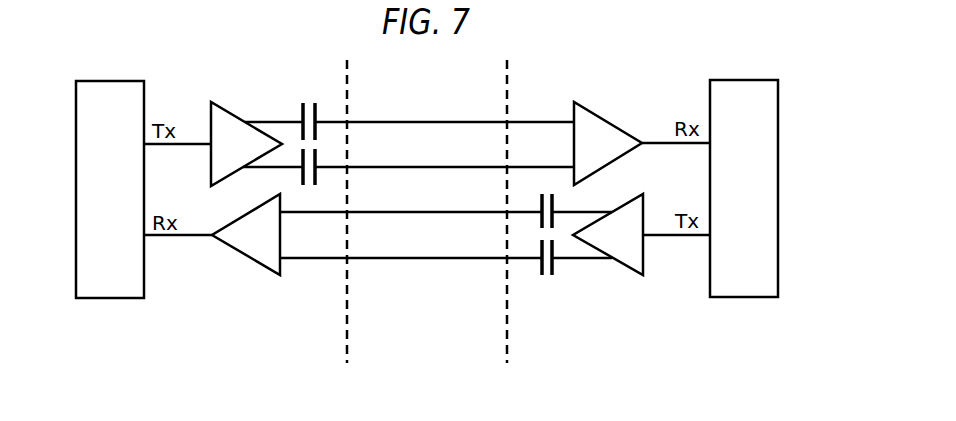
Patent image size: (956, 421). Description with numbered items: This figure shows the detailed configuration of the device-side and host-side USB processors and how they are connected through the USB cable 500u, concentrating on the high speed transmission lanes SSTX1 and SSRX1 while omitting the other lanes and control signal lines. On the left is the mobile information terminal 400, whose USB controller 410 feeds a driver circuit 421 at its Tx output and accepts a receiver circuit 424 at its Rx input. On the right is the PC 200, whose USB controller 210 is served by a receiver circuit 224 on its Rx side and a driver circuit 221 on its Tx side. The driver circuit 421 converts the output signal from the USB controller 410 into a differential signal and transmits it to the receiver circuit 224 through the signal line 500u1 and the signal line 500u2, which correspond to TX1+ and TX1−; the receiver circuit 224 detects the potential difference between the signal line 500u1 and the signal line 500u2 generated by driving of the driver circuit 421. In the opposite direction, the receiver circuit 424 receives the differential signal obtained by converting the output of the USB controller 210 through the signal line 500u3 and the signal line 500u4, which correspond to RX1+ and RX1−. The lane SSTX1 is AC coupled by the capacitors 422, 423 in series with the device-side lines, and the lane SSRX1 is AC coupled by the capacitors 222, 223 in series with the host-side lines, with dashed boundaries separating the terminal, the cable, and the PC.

The USB controller 410 is at (110, 189).
The USB controller 210 is at (744, 188).
The driver circuit 421 is at (246, 125).
The capacitor 422 is at (348, 110).
The capacitor 423 is at (348, 155).
The receiver circuit 424 is at (246, 257).
The receiver circuit 224 is at (608, 124).
The driver circuit 221 is at (608, 257).
The capacitor 222 is at (506, 225).
The capacitor 223 is at (506, 271).
The signal line 500u1 is at (444, 104).
The signal line 500u2 is at (444, 149).
The signal line 500u3 is at (411, 232).
The signal line 500u4 is at (411, 278).
The mobile information terminal 400 is at (340, 342).
The USB cable 500u is at (500, 342).
The PC 200 is at (514, 342).